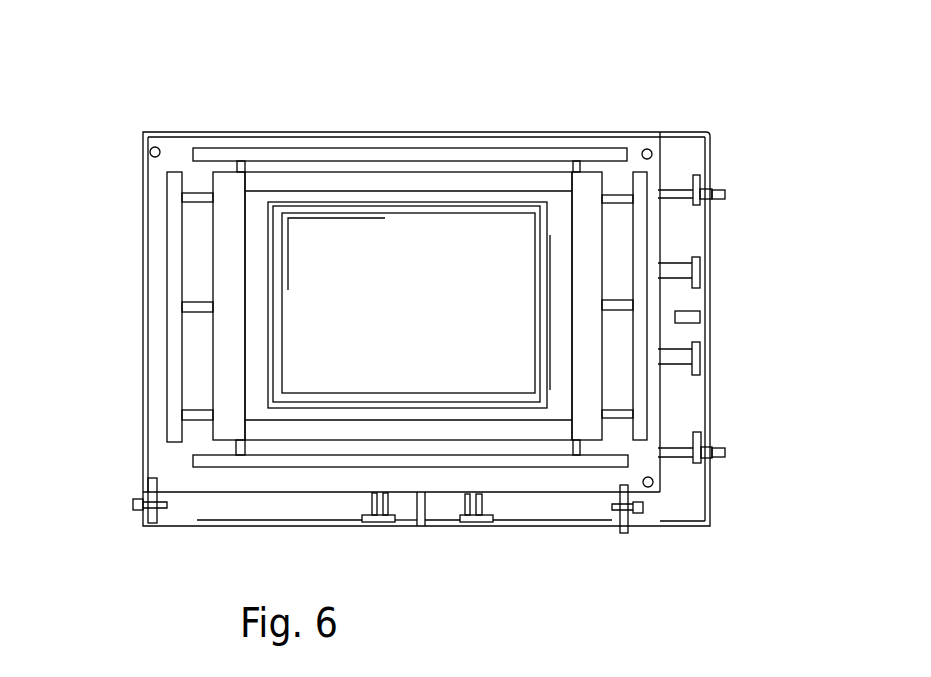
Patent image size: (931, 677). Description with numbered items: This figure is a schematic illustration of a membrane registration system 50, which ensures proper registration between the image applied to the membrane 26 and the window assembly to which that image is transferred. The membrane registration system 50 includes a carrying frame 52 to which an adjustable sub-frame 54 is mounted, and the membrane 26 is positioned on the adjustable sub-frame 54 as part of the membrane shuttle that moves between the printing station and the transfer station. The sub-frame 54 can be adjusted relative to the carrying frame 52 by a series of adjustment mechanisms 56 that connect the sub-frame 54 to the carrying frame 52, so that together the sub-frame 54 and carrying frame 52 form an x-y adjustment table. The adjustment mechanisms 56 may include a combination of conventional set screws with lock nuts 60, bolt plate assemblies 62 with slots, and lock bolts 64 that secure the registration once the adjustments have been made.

The membrane 26 is at (426, 316).
The membrane registration system 50 is at (737, 92).
The carrying frame 52 is at (535, 510).
The adjustable sub-frame 54 is at (195, 252).
The adjustment mechanisms 56 is at (708, 183).
The lock nuts 60 is at (727, 193).
The bolt plate assemblies 62 is at (712, 203).
The lock bolts 64 is at (155, 147).